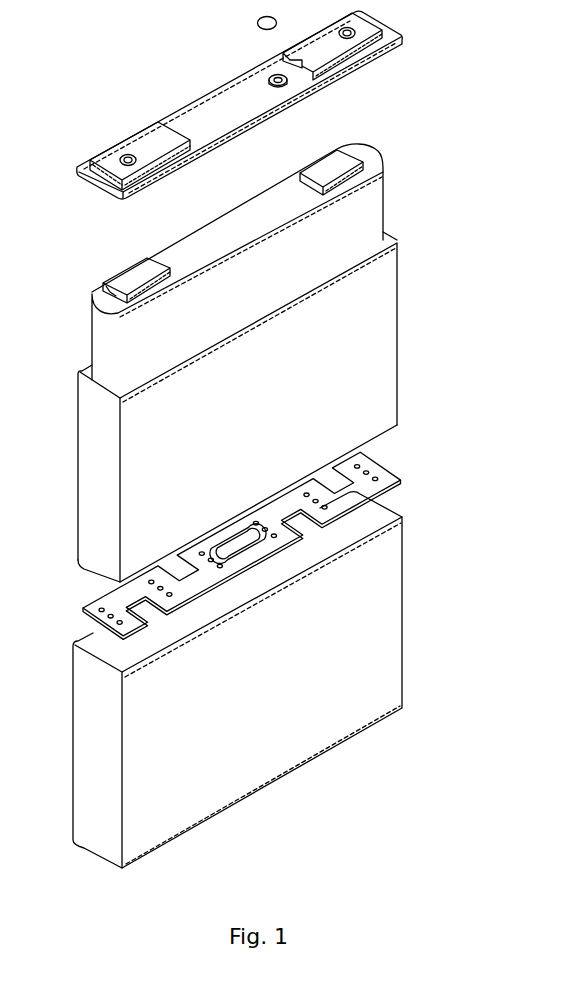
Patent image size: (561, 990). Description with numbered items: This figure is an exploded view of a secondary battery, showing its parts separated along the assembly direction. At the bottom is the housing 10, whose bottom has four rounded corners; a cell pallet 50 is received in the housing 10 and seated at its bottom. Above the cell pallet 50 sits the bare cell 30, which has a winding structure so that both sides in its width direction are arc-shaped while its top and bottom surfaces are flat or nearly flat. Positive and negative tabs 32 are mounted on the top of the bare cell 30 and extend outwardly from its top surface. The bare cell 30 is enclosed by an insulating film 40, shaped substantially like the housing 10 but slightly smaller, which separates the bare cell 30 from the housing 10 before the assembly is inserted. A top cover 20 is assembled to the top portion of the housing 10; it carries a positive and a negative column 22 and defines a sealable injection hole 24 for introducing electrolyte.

The housing 10 is at (292, 728).
The top cover 20 is at (240, 105).
The positive and negative column 22 is at (150, 138).
The sealable injection hole 24 is at (277, 76).
The bare cell 30 is at (245, 248).
The positive and negative tabs 32 is at (137, 280).
The insulating film 40 is at (375, 320).
The cell pallet 50 is at (396, 474).